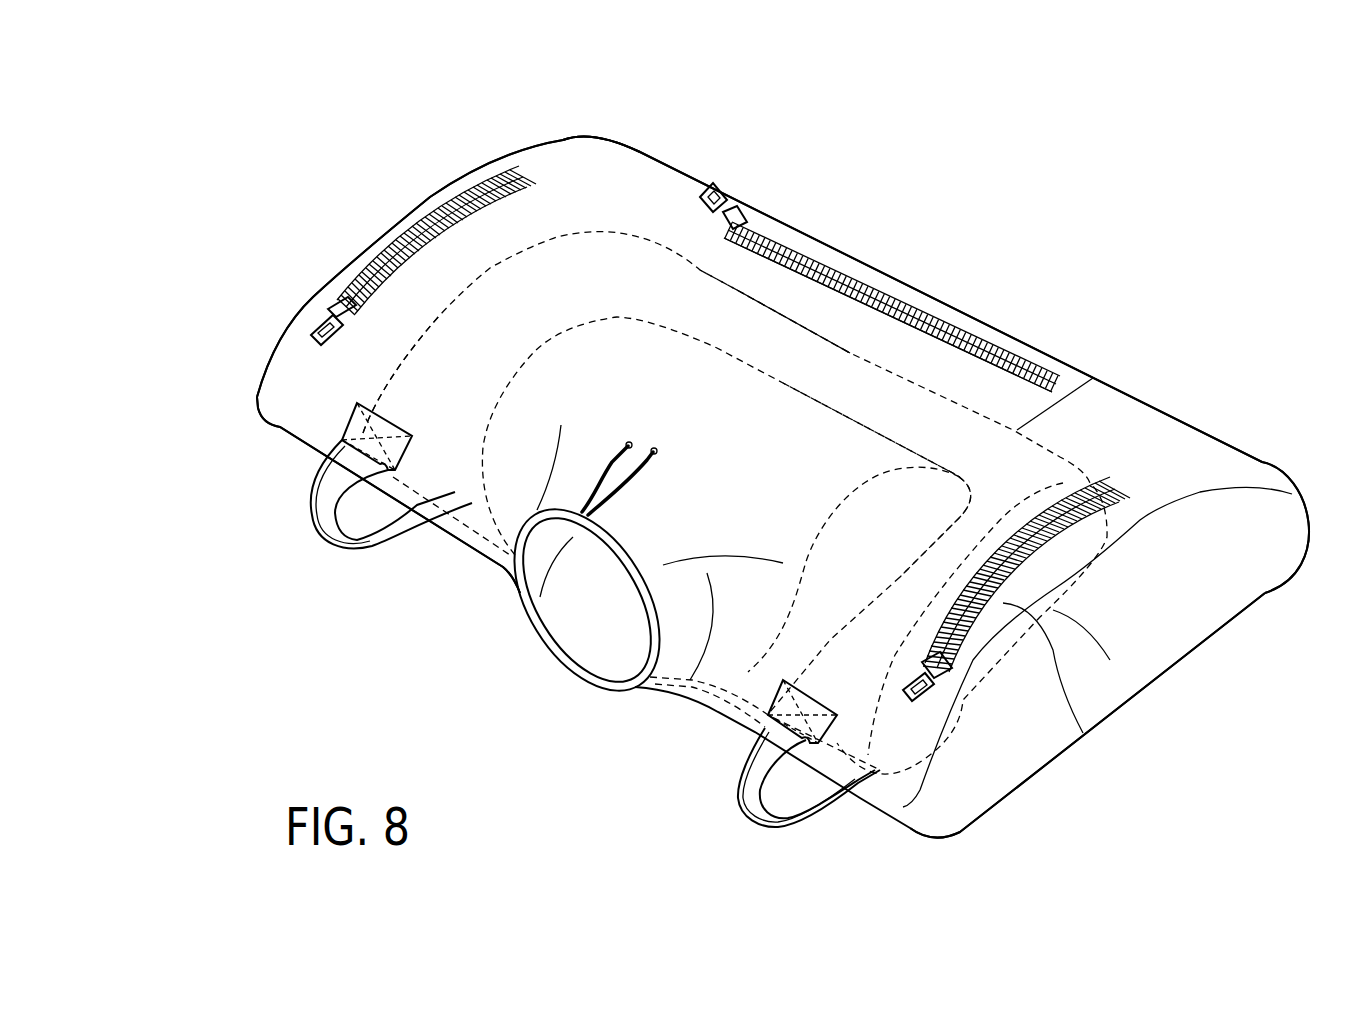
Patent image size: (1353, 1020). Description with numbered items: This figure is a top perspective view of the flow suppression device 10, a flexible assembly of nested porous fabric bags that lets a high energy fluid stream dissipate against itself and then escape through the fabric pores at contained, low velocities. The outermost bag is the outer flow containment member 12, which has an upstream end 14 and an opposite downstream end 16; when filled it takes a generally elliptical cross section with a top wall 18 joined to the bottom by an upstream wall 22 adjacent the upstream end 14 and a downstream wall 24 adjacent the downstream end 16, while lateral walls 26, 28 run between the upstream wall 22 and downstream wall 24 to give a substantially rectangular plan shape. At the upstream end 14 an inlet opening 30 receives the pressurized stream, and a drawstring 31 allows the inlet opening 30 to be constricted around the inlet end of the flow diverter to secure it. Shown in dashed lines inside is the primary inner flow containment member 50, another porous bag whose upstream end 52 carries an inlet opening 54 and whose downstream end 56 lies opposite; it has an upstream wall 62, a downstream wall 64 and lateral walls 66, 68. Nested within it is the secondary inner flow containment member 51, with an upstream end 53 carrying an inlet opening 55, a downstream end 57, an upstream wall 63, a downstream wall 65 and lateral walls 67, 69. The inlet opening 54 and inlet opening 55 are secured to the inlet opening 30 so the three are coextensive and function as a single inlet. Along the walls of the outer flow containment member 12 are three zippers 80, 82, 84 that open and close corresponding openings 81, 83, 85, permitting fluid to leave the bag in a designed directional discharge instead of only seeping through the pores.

The flow suppression device 10 is at (1120, 210).
The outer flow containment member 12 is at (523, 150).
The upstream end 14 is at (293, 440).
The downstream end 16 is at (1227, 443).
The top wall 18 is at (617, 197).
The upstream wall 22 is at (473, 505).
The downstream wall 24 is at (1160, 433).
The lateral wall 26 is at (1040, 750).
The lateral wall 28 is at (420, 203).
The inlet opening 30 is at (583, 640).
The drawstring 31 is at (645, 473).
The primary inner flow containment member 50 is at (807, 327).
The secondary inner flow containment member 51 is at (960, 473).
The upstream end 52 is at (802, 778).
The upstream end 53 is at (713, 680).
The inlet opening 54 is at (543, 633).
The inlet opening 55 is at (597, 690).
The downstream end 56 is at (1093, 378).
The downstream end 57 is at (843, 413).
The upstream wall 62 is at (733, 728).
The upstream wall 63 is at (708, 700).
The downstream wall 64 is at (737, 290).
The downstream wall 65 is at (720, 347).
The lateral wall 66 is at (1110, 660).
The lateral wall 67 is at (833, 588).
The lateral wall 68 is at (391, 375).
The lateral wall 69 is at (513, 387).
The zipper 80 is at (917, 303).
The opening 81 is at (957, 327).
The zipper 82 is at (1103, 513).
The opening 83 is at (1083, 733).
The zipper 84 is at (397, 233).
The opening 85 is at (363, 257).